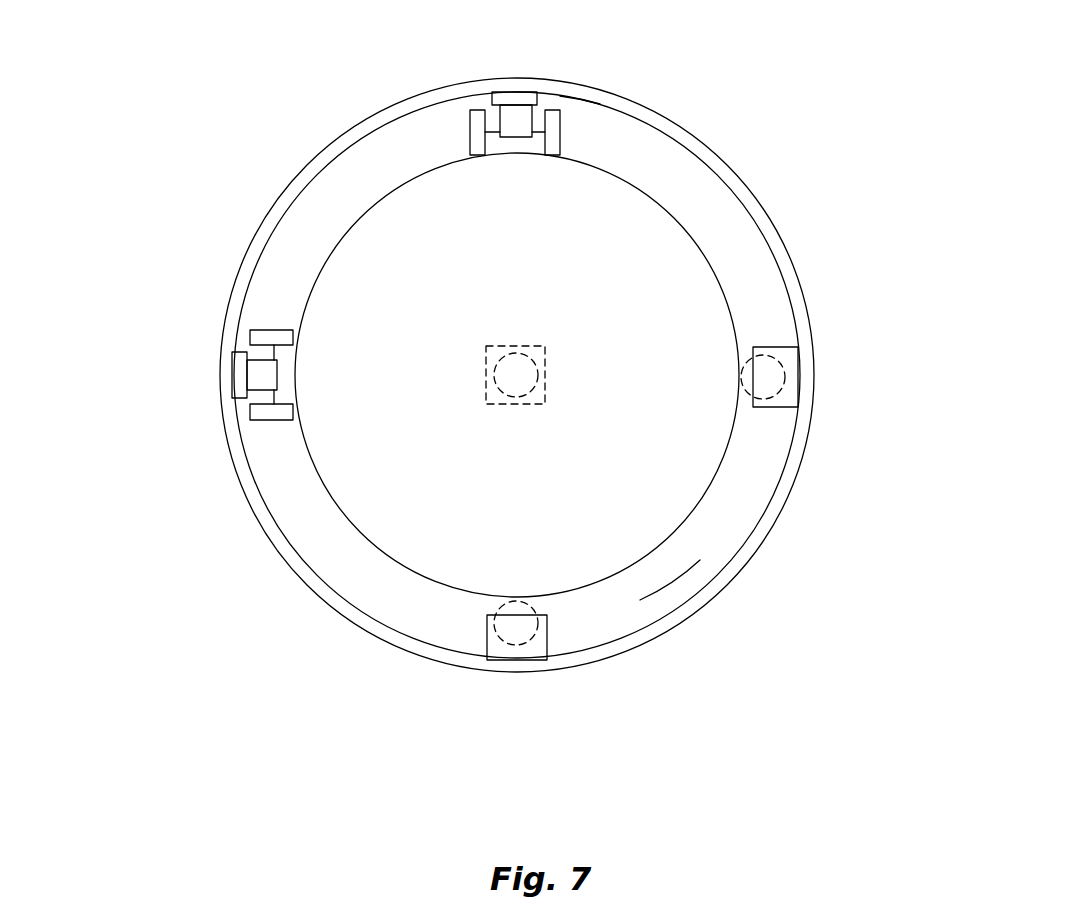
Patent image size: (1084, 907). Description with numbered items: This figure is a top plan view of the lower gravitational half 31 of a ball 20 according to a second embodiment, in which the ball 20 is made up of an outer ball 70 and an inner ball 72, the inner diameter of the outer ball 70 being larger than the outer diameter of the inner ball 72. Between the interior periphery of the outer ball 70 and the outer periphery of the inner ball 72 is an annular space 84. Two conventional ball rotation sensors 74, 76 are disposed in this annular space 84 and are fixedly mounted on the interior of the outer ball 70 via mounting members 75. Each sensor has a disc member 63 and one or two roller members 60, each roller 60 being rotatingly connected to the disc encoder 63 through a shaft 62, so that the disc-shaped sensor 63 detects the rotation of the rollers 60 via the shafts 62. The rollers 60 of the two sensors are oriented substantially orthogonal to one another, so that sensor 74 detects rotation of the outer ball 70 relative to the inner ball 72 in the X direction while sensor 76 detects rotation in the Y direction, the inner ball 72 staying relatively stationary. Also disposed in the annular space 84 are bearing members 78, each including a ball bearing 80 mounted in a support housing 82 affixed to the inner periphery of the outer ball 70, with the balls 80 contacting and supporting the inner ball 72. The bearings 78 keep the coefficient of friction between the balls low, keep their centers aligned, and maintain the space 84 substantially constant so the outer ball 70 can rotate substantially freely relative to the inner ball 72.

The ball 20 is at (767, 133).
The lower gravitational half 31 is at (217, 122).
The roller members 60 is at (478, 125).
The shafts 62 is at (273, 397).
The disc members 63 is at (512, 125).
The outer ball 70 is at (757, 543).
The inner ball 72 is at (698, 243).
The ball rotation sensor 74 is at (578, 123).
The mounting members 75 is at (505, 93).
The ball rotation sensor 76 is at (262, 313).
The bearing members 78 is at (493, 423).
The ball bearing 80 is at (512, 380).
The support housing 82 is at (487, 350).
The annular space 84 is at (640, 600).